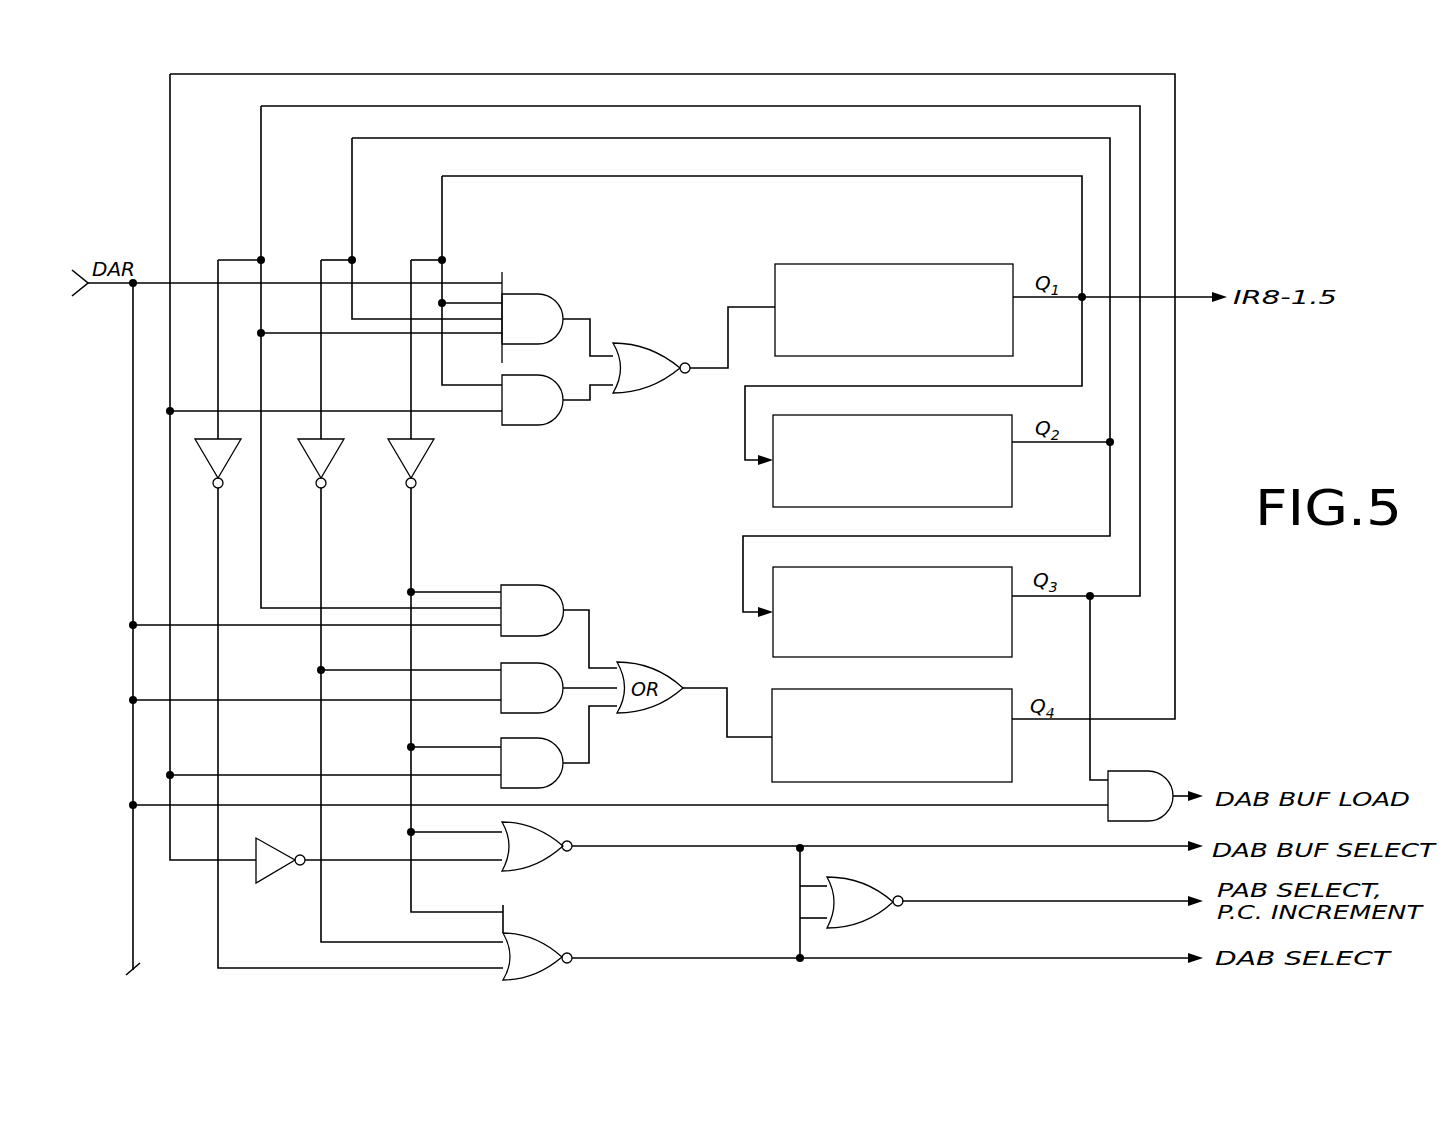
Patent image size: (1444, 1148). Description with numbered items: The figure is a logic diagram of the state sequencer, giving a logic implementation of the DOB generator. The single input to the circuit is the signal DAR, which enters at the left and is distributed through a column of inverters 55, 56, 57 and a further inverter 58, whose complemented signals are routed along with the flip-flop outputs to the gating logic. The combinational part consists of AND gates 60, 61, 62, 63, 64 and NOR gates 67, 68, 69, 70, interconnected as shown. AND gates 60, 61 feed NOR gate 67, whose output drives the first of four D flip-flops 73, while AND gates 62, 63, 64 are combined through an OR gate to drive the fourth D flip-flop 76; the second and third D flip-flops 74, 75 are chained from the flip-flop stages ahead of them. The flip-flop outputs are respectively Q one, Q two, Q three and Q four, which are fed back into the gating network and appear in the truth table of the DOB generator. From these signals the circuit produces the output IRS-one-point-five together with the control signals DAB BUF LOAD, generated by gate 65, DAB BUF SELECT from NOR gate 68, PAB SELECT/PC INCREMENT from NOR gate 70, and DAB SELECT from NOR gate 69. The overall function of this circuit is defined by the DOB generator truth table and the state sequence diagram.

The inverter 55 is at (212, 466).
The inverter 56 is at (312, 462).
The inverter 57 is at (398, 462).
The inverter 58 is at (285, 850).
The AND gate 60 is at (543, 293).
The AND gate 61 is at (545, 376).
The AND gate 62 is at (550, 590).
The AND gate 63 is at (550, 667).
The AND gate 64 is at (548, 743).
The AND gate 65 is at (1156, 772).
The NOR gate 67 is at (660, 353).
The NOR gate 68 is at (548, 838).
The NOR gate 69 is at (547, 941).
The NOR gate 70 is at (884, 889).
The D flip-flop 73 is at (930, 264).
The D flip-flop 74 is at (935, 415).
The D flip-flop 75 is at (930, 567).
The D flip-flop 76 is at (925, 689).